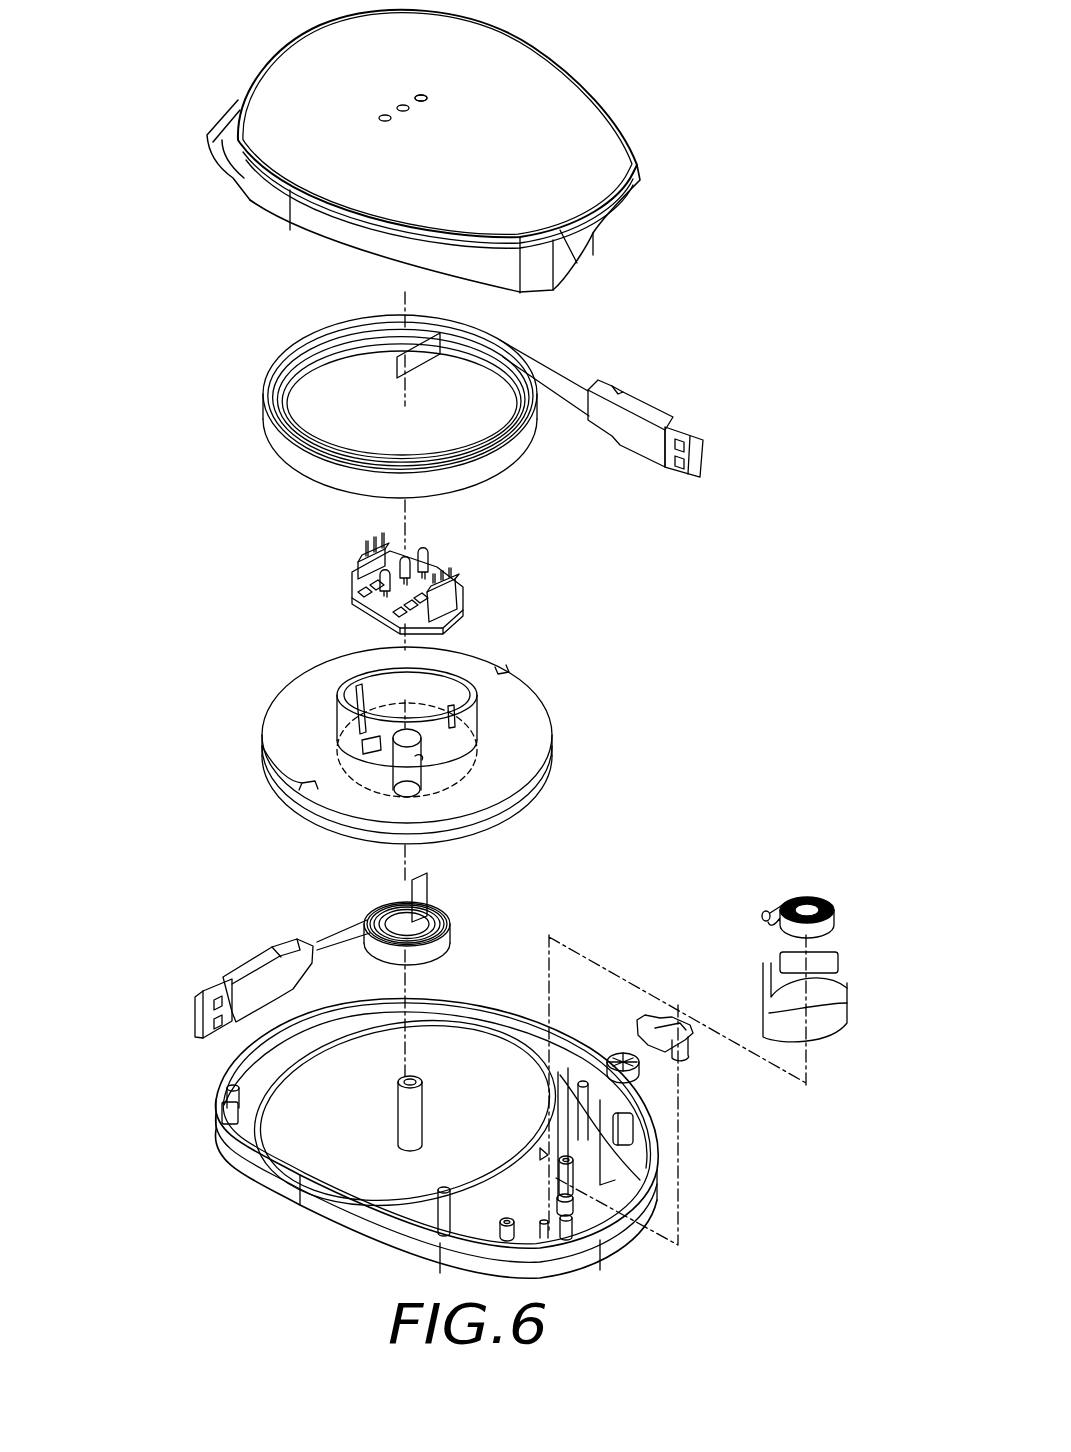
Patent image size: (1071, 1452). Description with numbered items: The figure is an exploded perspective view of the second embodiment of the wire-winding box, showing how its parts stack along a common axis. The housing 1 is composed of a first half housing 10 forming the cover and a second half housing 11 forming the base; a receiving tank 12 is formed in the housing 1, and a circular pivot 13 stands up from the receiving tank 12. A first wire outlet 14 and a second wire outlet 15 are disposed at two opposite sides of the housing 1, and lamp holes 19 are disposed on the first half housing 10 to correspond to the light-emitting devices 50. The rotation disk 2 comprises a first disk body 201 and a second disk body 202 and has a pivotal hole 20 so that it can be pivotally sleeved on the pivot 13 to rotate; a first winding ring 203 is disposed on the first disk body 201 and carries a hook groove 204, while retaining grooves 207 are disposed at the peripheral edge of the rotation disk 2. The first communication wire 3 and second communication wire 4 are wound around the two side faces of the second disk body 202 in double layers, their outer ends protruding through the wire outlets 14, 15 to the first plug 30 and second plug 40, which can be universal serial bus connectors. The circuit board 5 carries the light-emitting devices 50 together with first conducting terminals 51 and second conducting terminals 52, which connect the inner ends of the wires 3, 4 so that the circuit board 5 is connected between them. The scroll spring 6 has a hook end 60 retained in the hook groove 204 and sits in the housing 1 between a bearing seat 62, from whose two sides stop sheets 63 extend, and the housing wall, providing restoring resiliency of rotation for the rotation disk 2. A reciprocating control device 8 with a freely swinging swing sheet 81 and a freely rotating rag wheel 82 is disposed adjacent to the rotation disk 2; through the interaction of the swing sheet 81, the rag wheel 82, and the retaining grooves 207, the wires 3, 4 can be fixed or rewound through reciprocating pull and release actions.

The housing 1 is at (426, 1110).
The rotation disk 2 is at (403, 735).
The first communication wire 3 is at (320, 940).
The second communication wire 4 is at (515, 350).
The circuit board 5 is at (414, 572).
The scroll spring 6 is at (801, 878).
The reciprocating control device 8 is at (635, 996).
The first half housing 10 is at (640, 160).
The second half housing 11 is at (470, 1003).
The receiving tank 12 is at (340, 1047).
The circular pivot 13 is at (404, 1115).
The first wire outlet 14 is at (225, 1120).
The second wire outlet 15 is at (608, 1135).
The lamp holes 19 is at (427, 98).
The pivotal hole 20 is at (357, 756).
The first plug 30 is at (236, 965).
The second plug 40 is at (652, 392).
The light-emitting devices 50 is at (428, 562).
The first conducting terminals 51 is at (366, 546).
The second conducting terminals 52 is at (458, 605).
The hook end 60 is at (764, 912).
The bearing seat 62 is at (815, 1003).
The stop sheets 63 is at (824, 963).
The swing sheet 81 is at (662, 1016).
The rag wheel 82 is at (640, 1012).
The first disk body 201 is at (312, 738).
The second disk body 202 is at (268, 797).
The first winding ring 203 is at (465, 737).
The hook groove 204 is at (362, 752).
The retaining grooves 207 is at (508, 672).